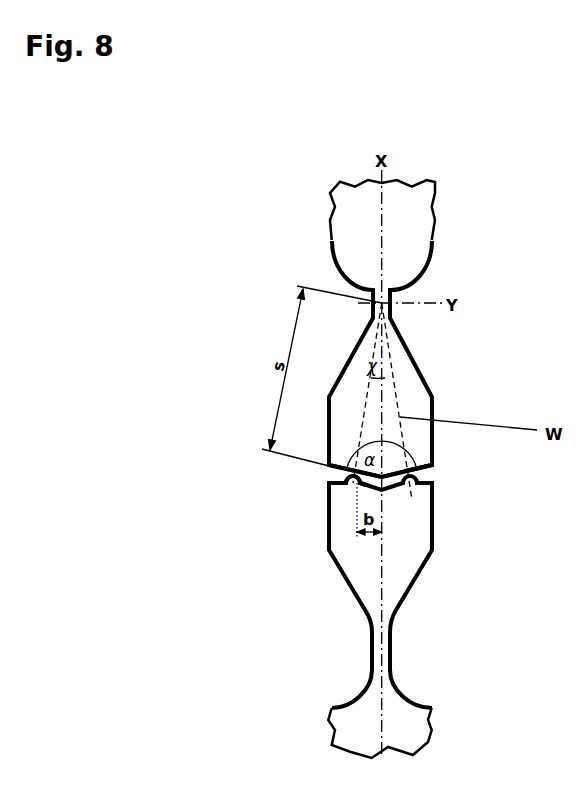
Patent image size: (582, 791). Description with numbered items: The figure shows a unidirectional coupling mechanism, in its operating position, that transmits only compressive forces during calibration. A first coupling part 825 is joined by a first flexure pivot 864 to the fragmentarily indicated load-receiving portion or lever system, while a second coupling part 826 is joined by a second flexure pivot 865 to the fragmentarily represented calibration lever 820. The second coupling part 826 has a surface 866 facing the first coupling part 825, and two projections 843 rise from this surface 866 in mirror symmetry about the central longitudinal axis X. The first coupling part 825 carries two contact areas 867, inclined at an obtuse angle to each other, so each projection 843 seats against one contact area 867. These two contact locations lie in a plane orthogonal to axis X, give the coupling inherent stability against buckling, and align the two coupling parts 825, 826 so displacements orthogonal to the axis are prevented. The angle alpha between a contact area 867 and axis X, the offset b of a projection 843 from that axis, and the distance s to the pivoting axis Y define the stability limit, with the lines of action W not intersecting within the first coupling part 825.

The first flexure pivot 864 is at (386, 291).
The first coupling part 825 is at (417, 398).
The contact areas 867 is at (493, 489).
The surface 866 is at (352, 478).
The projections 843 is at (267, 524).
The second coupling part 826 is at (355, 567).
The second flexure pivot 865 is at (381, 653).
The calibration lever 820 is at (362, 722).